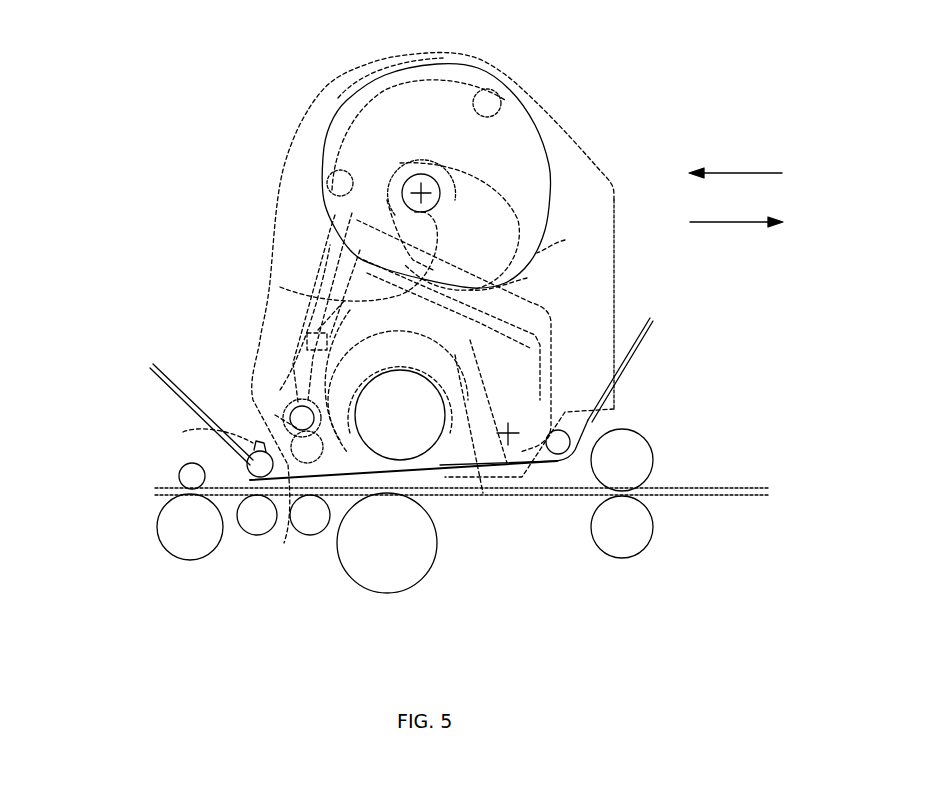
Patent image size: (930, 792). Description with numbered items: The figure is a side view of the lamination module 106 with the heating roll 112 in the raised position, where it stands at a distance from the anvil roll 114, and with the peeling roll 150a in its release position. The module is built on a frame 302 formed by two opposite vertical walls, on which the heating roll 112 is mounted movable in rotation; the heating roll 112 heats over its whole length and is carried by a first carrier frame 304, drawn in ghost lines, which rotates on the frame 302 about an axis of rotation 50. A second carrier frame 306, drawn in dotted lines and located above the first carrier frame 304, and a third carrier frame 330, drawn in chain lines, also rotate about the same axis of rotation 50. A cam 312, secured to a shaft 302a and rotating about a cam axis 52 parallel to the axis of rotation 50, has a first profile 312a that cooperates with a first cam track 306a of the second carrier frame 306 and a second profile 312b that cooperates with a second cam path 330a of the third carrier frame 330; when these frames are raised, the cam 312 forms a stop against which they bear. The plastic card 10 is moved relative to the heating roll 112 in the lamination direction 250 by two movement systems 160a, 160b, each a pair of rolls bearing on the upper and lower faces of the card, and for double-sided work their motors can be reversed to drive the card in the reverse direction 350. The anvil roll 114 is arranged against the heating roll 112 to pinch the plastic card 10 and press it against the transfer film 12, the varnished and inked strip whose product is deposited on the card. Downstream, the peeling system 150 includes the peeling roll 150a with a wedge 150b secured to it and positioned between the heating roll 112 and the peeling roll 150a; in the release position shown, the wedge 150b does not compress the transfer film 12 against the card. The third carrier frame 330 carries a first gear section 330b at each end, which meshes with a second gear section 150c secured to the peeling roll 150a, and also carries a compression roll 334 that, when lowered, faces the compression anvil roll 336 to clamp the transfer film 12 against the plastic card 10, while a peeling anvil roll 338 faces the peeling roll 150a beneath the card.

The plastic card 10 is at (676, 496).
The transfer film 12 is at (655, 318).
The axis of rotation 50 is at (614, 406).
The cam axis 52 is at (410, 183).
The lamination module 106 is at (655, 122).
The heating roll 112 is at (418, 428).
The anvil roll 114 is at (424, 566).
The peeling system 150 is at (150, 423).
The peeling roll 150a is at (240, 463).
The wedge 150b is at (284, 543).
The second gear section 150c is at (183, 432).
The movement system 160a is at (717, 547).
The movement system 160b is at (157, 556).
The lamination direction 250 is at (735, 165).
The frame 302 is at (357, 72).
The shaft 302a is at (416, 178).
The first carrier frame 304 is at (467, 477).
The second carrier frame 306 is at (555, 352).
The first cam track 306a is at (447, 258).
The cam 312 is at (480, 67).
The first profile 312a is at (527, 278).
The second profile 312b is at (565, 240).
The third carrier frame 330 is at (292, 397).
The second cam path 330a is at (320, 293).
The first gear section 330b is at (275, 415).
The compression roll 334 is at (247, 440).
The compression anvil roll 336 is at (318, 535).
The peeling anvil roll 338 is at (252, 530).
The reverse direction 350 is at (736, 213).